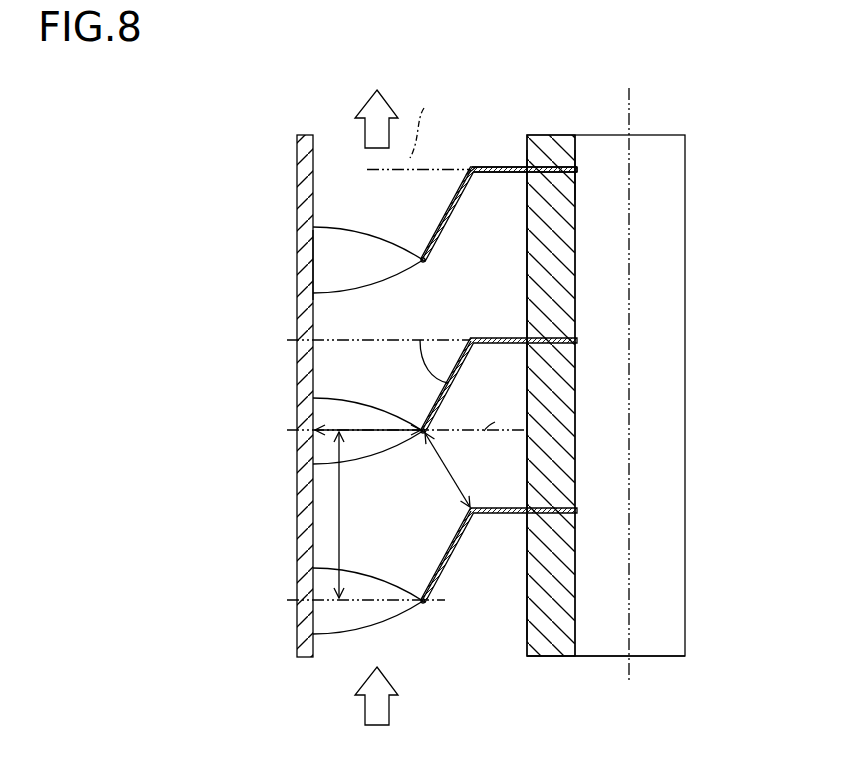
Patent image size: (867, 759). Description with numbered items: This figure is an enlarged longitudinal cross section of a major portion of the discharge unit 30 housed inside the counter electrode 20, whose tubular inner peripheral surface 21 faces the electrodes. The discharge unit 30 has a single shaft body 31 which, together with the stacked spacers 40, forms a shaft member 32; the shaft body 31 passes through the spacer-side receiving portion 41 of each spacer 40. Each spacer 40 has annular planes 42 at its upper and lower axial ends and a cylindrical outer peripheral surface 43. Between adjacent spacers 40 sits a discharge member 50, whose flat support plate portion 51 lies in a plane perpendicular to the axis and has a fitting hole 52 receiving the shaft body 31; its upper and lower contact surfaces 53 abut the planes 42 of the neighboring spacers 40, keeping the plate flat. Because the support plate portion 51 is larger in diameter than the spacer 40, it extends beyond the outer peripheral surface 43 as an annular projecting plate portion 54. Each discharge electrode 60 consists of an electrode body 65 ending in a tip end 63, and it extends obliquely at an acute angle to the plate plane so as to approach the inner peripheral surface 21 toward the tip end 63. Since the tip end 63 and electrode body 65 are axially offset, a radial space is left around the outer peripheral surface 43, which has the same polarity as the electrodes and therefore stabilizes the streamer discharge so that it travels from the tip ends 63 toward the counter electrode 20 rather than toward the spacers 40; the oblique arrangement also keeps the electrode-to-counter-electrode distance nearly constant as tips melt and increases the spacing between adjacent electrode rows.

The counter electrode 20 is at (295, 385).
The inner peripheral surface 21 is at (316, 295).
The discharge unit 30 is at (248, 135).
The shaft body 31 is at (672, 262).
The shaft member 32 is at (587, 669).
The spacer 40 is at (524, 240).
The spacer-side receiving portion 41 is at (577, 300).
The annular plane 42 is at (544, 172).
The outer peripheral surface 43 is at (527, 272).
The discharge member 50 is at (580, 166).
The support plate portion 51 is at (498, 164).
The fitting hole 52 is at (582, 170).
The contact surface 53 is at (552, 172).
The projecting plate portion 54 is at (471, 165).
The discharge electrode 60 is at (418, 241).
The tip end 63 is at (424, 263).
The electrode body 65 is at (436, 226).